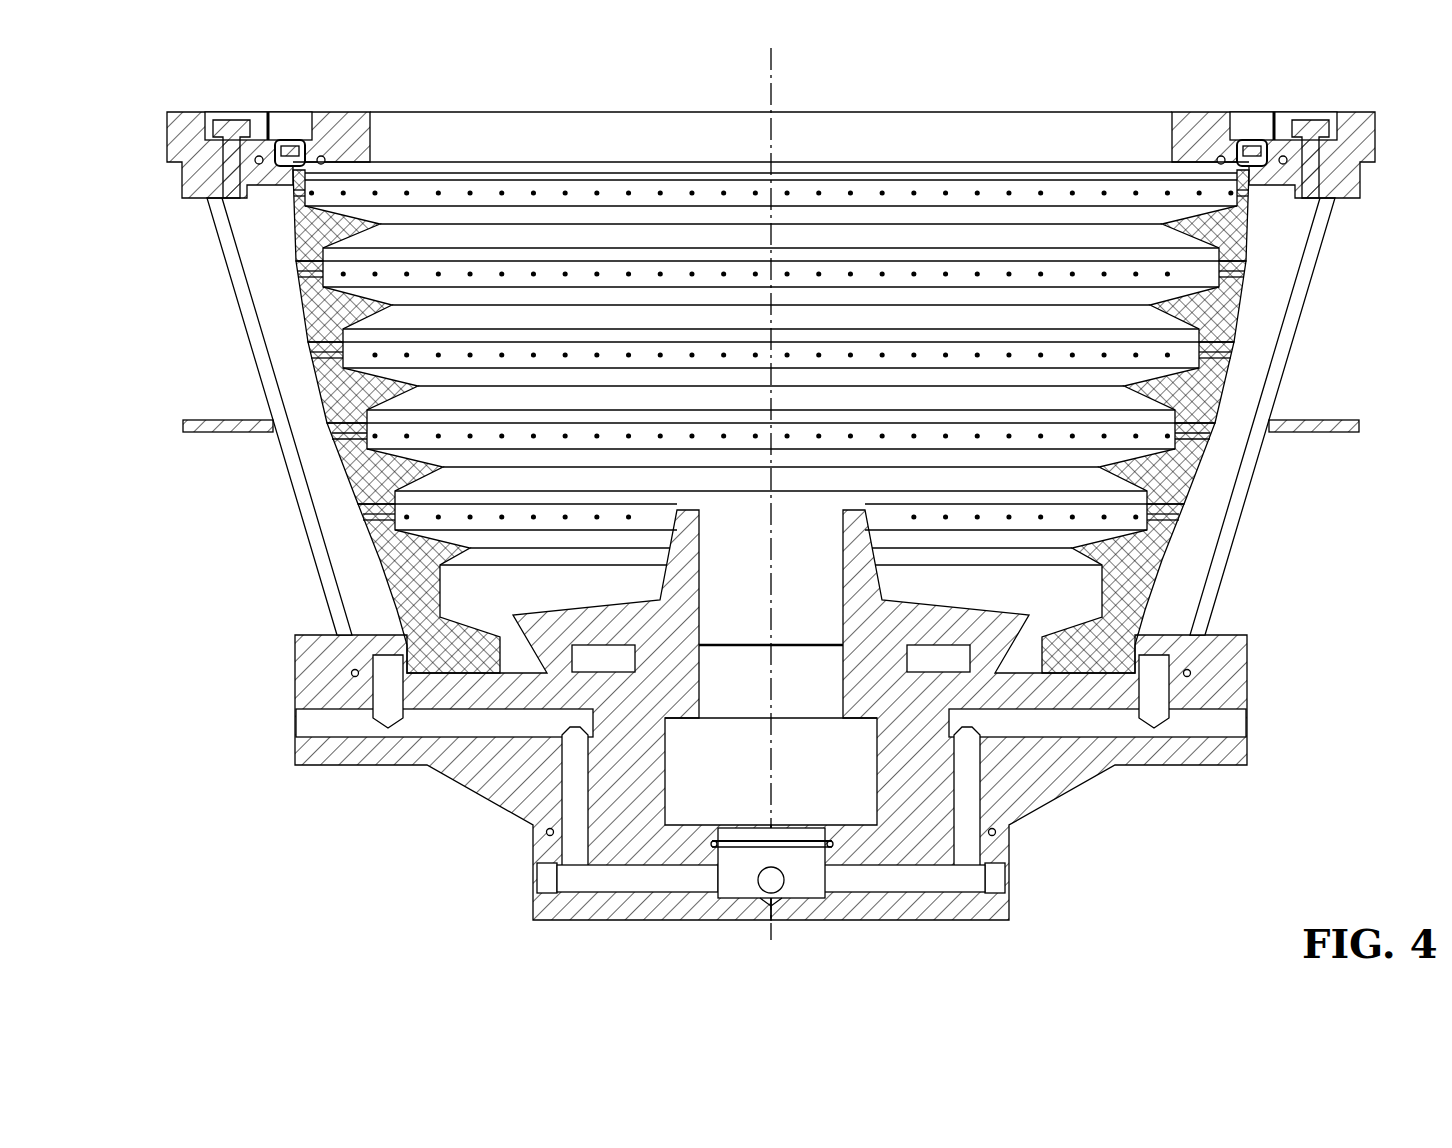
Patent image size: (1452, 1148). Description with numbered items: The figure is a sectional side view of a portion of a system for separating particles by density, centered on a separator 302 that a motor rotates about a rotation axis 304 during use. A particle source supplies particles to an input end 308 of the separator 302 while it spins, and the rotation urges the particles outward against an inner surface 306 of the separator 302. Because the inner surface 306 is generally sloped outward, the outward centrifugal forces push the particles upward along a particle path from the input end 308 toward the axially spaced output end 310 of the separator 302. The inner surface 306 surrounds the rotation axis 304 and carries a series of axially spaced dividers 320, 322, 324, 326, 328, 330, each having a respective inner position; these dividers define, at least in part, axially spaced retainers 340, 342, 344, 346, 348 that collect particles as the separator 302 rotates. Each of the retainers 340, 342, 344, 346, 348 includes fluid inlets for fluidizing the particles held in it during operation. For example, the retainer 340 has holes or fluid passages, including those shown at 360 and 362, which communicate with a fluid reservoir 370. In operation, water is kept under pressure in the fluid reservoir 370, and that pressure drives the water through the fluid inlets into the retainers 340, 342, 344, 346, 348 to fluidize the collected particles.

The separator 302 is at (240, 80).
The rotation axis 304 is at (778, 81).
The inner surface 306 is at (1012, 228).
The input end 308 is at (468, 595).
The output end 310 is at (540, 118).
The divider 320 is at (442, 553).
The divider 322 is at (415, 472).
The divider 324 is at (390, 391).
The divider 326 is at (364, 310).
The divider 328 is at (352, 229).
The divider 330 is at (372, 132).
The retainer 340 is at (1105, 534).
The retainer 342 is at (1132, 454).
The retainer 344 is at (1157, 373).
The retainer 346 is at (1183, 292).
The retainer 348 is at (1195, 212).
The fluid passage 360 is at (1176, 509).
The fluid passage 362 is at (1045, 525).
The fluid reservoir 370 is at (1192, 568).